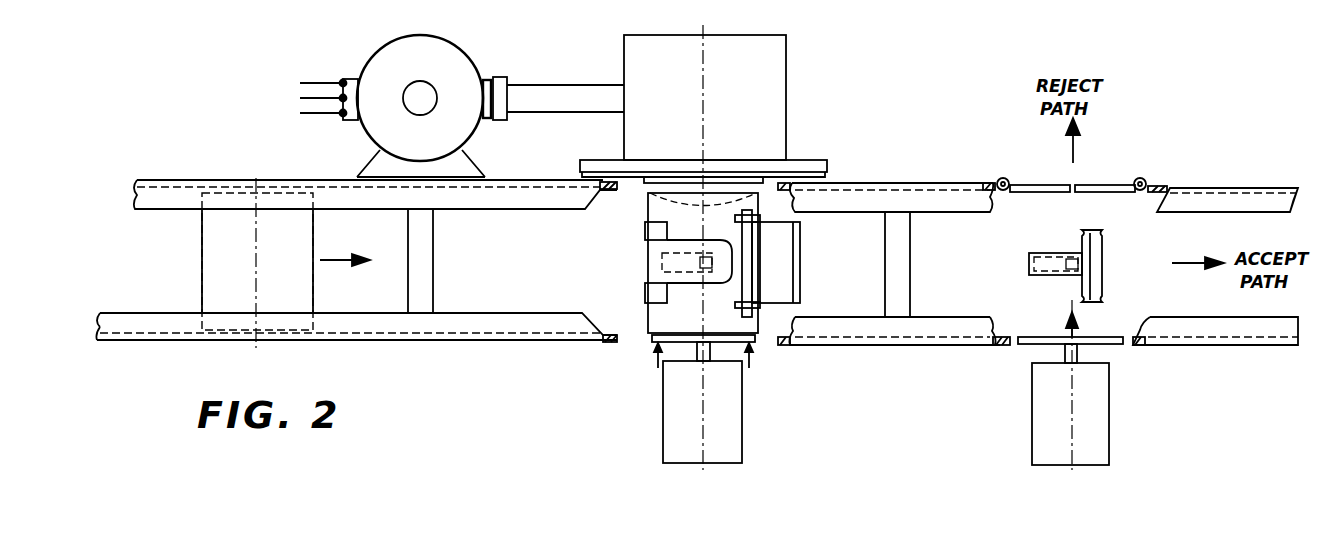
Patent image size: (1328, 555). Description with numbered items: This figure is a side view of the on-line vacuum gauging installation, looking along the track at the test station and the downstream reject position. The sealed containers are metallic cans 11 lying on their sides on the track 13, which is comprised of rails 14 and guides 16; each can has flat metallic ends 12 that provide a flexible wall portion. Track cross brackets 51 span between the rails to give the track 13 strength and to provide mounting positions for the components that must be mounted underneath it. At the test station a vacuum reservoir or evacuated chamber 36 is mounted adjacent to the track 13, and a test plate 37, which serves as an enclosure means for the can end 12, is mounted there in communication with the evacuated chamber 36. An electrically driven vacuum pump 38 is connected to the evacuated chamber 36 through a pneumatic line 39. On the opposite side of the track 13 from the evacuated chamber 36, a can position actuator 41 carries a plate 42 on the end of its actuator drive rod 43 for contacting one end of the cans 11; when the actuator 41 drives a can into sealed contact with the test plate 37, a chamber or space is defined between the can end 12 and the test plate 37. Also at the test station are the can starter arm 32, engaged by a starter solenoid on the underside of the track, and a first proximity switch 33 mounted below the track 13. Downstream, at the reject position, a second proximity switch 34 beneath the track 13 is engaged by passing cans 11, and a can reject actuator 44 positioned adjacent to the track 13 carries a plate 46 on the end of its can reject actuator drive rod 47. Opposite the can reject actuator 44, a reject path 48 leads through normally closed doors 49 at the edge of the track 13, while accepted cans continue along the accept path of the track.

The metallic cans 11 is at (202, 243).
The flat metallic ends 12 is at (672, 198).
The track 13 is at (407, 350).
The rails 14 is at (478, 338).
The guides 16 is at (372, 341).
The can starter arm 32 is at (645, 228).
The first proximity switch 33 is at (662, 260).
The second proximity switch 34 is at (1045, 240).
The evacuated chamber 36 is at (786, 62).
The test plate 37 is at (735, 174).
The vacuum pump 38 is at (384, 56).
The pneumatic line 39 is at (545, 86).
The can position actuator 41 is at (665, 413).
The plate 42 is at (650, 343).
The actuator drive rod 43 is at (700, 350).
The can reject actuator 44 is at (1035, 392).
The plate 46 is at (1046, 322).
The can reject actuator drive rod 47 is at (1058, 350).
The reject path 48 is at (1066, 152).
The normally closed doors 49 is at (1098, 185).
The track cross brackets 51 is at (405, 278).